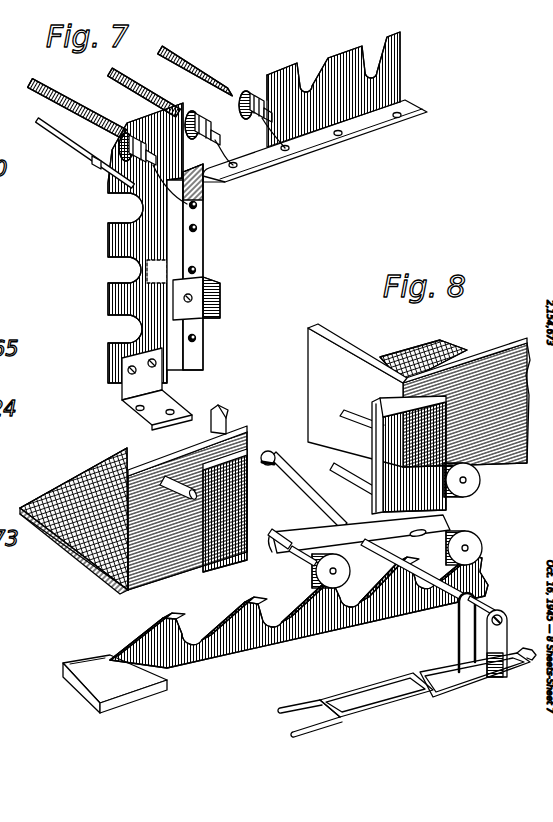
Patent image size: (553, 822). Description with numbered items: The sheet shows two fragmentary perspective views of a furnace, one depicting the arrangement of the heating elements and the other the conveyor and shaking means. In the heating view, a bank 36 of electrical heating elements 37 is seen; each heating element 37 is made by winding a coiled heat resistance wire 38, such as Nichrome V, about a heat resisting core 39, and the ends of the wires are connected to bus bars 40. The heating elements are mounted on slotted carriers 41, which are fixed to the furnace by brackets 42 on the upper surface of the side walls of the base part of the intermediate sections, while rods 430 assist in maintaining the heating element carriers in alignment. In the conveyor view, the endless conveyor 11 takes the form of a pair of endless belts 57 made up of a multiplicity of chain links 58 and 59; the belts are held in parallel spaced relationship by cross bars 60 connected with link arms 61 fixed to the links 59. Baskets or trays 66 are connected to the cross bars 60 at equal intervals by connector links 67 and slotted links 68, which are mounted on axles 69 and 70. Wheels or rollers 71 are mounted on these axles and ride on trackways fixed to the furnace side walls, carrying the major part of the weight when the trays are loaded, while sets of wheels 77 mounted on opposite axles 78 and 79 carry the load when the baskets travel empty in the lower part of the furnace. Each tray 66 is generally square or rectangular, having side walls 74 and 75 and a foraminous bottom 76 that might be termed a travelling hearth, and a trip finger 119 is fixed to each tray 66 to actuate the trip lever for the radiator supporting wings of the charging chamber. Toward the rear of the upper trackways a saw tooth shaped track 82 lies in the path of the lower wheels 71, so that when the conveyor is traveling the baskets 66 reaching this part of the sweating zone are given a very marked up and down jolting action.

In FIG. 7, the bank of electrical heating elements 36 is at (104, 233).
In FIG. 7, the heating elements 37 is at (161, 56).
In FIG. 7, the rods 430 is at (57, 137).
In FIG. 7, the coiled heat resistance wire 38 is at (275, 128).
In FIG. 7, the heat resisting core 39 is at (290, 125).
In FIG. 7, the bus bars 40 is at (394, 124).
In FIG. 7, the slotted carriers 41 is at (392, 65).
In FIG. 7, the brackets 42 is at (126, 406).
In FIG. 8, the trays 66 is at (444, 333).
In FIG. 8, the side wall 74 is at (493, 372).
In FIG. 8, the side wall 75 is at (223, 417).
In FIG. 8, the foraminous bottom 76 is at (408, 353).
In FIG. 8, the wheels 77 is at (482, 480).
In FIG. 8, the axle 78 is at (273, 466).
In FIG. 8, the axle 79 is at (343, 413).
In FIG. 8, the axle 70 is at (347, 483).
In FIG. 8, the slotted links 68 is at (467, 507).
In FIG. 8, the wheels 71 is at (472, 540).
In FIG. 8, the connector links 67 is at (265, 556).
In FIG. 8, the axle 69 is at (313, 562).
In FIG. 8, the trip finger 119 is at (190, 497).
In FIG. 8, the saw tooth shaped track 82 is at (230, 647).
In FIG. 8, the cross bars 60 is at (443, 597).
In FIG. 8, the chain links 59 is at (463, 690).
In FIG. 8, the link arms 61 is at (497, 680).
In FIG. 8, the endless conveyor 11 is at (423, 708).
In FIG. 8, the endless belts 57 is at (353, 720).
In FIG. 8, the chain links 58 is at (320, 730).